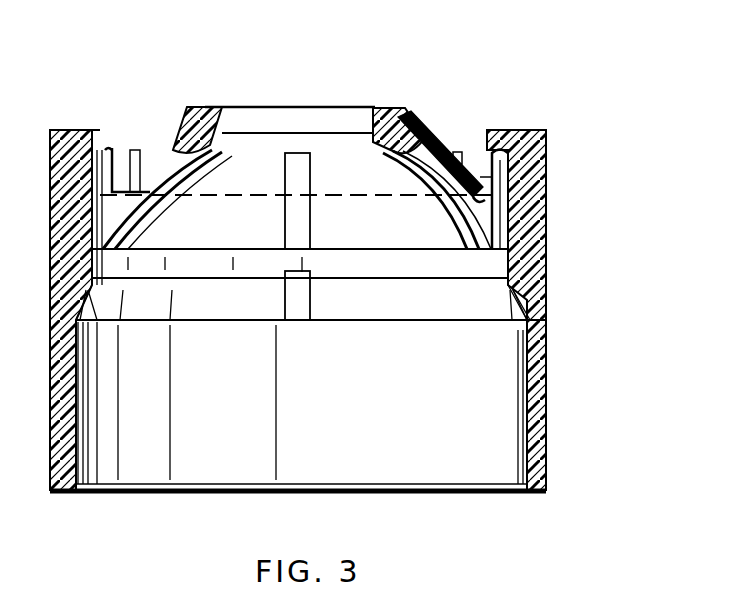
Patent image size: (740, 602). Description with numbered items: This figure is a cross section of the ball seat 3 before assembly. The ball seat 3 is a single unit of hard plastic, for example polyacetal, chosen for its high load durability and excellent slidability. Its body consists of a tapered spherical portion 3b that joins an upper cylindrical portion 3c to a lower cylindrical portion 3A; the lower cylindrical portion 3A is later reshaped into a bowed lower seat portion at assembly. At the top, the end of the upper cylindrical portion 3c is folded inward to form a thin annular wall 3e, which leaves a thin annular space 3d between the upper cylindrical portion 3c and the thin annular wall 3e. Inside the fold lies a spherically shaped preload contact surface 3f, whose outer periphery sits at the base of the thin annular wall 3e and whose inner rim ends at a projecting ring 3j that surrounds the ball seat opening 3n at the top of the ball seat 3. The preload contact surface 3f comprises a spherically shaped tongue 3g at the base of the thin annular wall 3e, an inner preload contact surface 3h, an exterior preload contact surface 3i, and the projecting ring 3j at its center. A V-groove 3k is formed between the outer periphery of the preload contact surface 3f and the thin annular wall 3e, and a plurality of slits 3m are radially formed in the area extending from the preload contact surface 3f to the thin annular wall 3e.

The ball seat 3 is at (548, 143).
The lower cylindrical portion 3A is at (548, 416).
The tapered spherical portion 3b is at (548, 320).
The upper cylindrical portion 3c is at (528, 243).
The thin annular space 3d is at (550, 212).
The thin annular wall 3e is at (547, 187).
The preload contact surface 3f is at (453, 130).
The spherically shaped tongue 3g is at (550, 283).
The inner preload contact surface 3h is at (373, 217).
The exterior preload contact surface 3i is at (423, 127).
The projecting ring 3j is at (388, 107).
The V-groove 3k is at (483, 152).
The slits 3m is at (297, 223).
The ball seat opening 3n is at (303, 110).